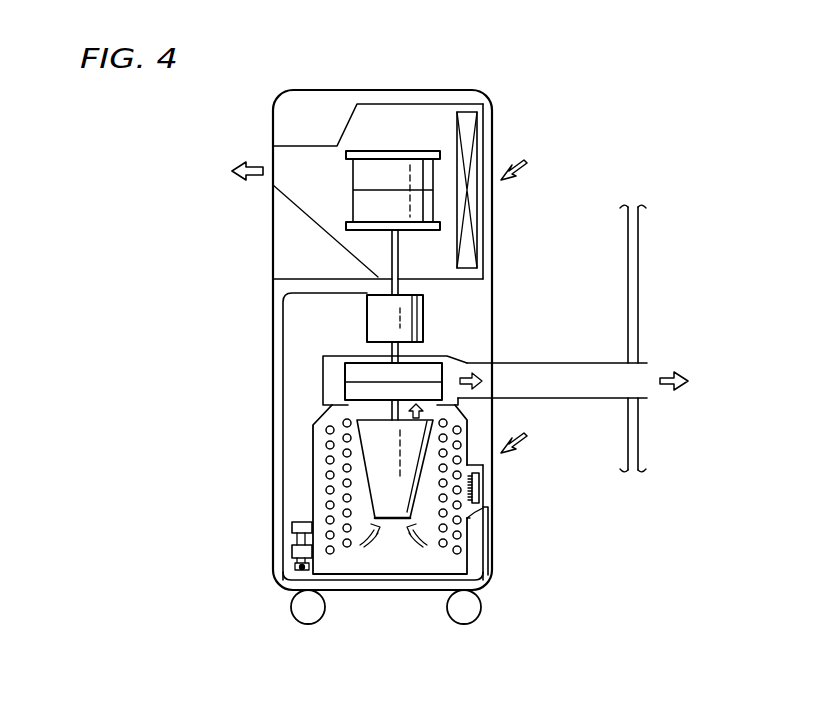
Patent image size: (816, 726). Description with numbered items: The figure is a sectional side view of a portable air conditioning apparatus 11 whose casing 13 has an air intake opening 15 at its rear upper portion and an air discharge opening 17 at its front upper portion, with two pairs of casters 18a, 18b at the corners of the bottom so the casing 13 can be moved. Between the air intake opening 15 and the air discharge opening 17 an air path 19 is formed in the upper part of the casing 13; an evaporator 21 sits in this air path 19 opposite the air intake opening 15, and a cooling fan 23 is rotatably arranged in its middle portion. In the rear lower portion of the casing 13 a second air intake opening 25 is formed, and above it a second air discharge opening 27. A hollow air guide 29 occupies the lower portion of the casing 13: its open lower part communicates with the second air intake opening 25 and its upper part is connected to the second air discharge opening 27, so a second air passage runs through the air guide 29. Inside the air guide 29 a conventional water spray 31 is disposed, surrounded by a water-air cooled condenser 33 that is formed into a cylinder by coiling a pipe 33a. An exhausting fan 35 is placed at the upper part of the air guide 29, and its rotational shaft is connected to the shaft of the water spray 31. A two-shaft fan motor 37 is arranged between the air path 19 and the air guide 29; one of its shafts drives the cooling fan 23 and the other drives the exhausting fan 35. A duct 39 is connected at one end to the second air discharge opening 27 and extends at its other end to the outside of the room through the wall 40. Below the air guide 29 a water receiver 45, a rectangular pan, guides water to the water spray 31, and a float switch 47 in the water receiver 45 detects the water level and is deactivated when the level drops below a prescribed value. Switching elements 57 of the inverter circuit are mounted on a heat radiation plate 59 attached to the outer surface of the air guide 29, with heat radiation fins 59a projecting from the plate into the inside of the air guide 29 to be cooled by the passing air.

The portable air conditioning apparatus 11 is at (285, 83).
The casing 13 is at (315, 91).
The air intake opening 15 is at (493, 123).
The air discharge opening 17 is at (273, 162).
The air path 19 is at (423, 120).
The evaporator 21 is at (447, 122).
The cooling fan 23 is at (385, 150).
The second air intake opening 25 is at (492, 498).
The second air discharge opening 27 is at (490, 382).
The air guide 29 is at (313, 481).
The water spray 31 is at (357, 440).
The water-air cooled condenser 33 is at (325, 563).
The pipe 33a is at (320, 503).
The exhausting fan 35 is at (345, 372).
The two-shaft fan motor 37 is at (425, 320).
The duct 39 is at (617, 363).
The wall 40 is at (640, 308).
The water receiver 45 is at (405, 577).
The float switch 47 is at (292, 547).
The switching elements 57 is at (480, 476).
The heat radiation plate 59 is at (472, 463).
The heat radiation fins 59a is at (470, 522).
The caster 18a is at (308, 612).
The caster 18b is at (464, 612).